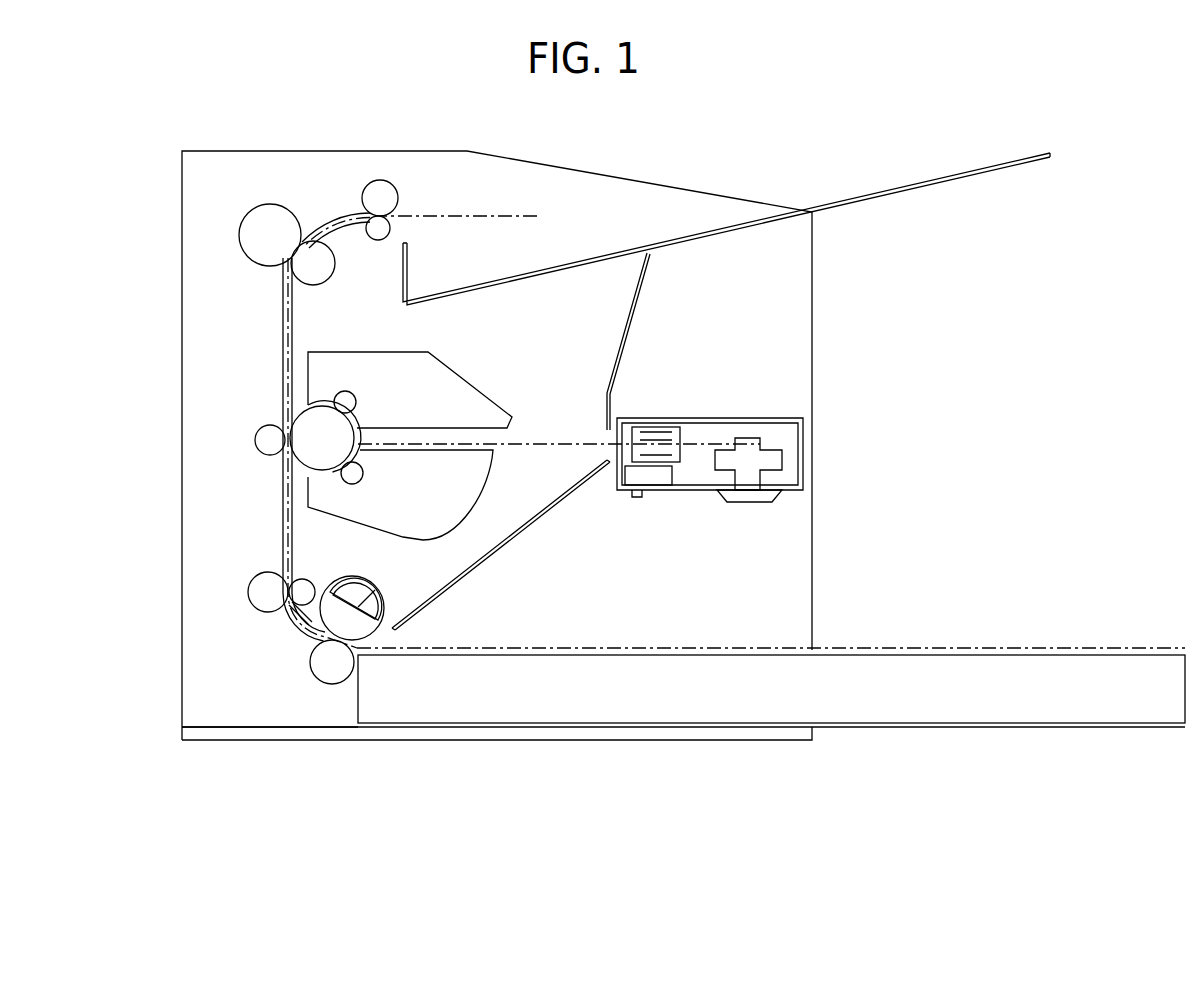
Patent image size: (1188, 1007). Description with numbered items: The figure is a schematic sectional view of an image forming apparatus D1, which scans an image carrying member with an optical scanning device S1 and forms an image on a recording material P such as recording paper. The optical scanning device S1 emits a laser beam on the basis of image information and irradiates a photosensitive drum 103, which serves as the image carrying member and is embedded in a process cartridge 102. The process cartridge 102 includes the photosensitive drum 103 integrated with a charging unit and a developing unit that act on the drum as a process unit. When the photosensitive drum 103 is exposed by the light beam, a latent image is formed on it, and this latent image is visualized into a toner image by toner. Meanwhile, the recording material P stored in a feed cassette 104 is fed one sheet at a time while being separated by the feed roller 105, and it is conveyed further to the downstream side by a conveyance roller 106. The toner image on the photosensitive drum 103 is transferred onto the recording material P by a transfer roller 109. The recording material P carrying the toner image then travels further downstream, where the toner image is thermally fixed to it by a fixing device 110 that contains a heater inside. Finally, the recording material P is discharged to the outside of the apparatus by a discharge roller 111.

The image forming apparatus D1 is at (210, 168).
The fixing device 110 is at (273, 212).
The discharge roller 111 is at (380, 190).
The photosensitive drum 103 is at (320, 417).
The process cartridge 102 is at (457, 372).
The transfer roller 109 is at (268, 435).
The conveyance roller 106 is at (258, 590).
The feed roller 105 is at (360, 592).
The optical scanning device S1 is at (785, 430).
The recording material P is at (950, 650).
The feed cassette 104 is at (838, 728).